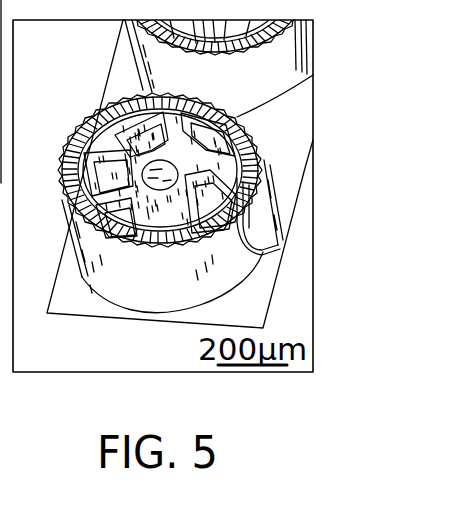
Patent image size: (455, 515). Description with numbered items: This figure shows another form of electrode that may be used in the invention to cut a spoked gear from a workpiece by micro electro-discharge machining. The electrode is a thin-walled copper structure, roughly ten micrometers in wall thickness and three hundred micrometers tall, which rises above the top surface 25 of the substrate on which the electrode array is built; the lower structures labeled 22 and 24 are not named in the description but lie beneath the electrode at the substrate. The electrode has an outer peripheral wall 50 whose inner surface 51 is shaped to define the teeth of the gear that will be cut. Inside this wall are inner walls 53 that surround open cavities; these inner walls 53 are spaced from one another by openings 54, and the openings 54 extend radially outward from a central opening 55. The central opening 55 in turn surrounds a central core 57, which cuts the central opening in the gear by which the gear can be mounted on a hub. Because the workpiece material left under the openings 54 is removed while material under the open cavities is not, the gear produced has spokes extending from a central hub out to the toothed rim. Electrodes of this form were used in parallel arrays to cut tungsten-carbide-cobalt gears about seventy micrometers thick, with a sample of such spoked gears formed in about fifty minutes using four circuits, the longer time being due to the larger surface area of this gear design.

The substrate 22 is at (313, 323).
The support post 24 is at (258, 305).
The top surface of the substrate 25 is at (219, 225).
The outer peripheral wall 50 is at (252, 230).
The inner surface 51 is at (258, 157).
The inner walls 53 is at (235, 191).
The openings 54 is at (263, 252).
The central opening 55 is at (135, 192).
The central core 57 is at (165, 178).